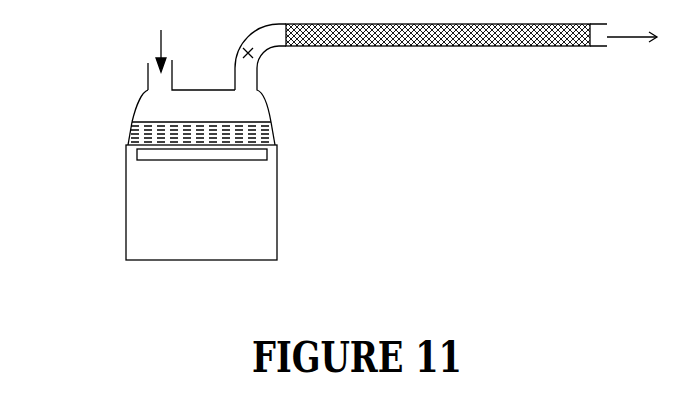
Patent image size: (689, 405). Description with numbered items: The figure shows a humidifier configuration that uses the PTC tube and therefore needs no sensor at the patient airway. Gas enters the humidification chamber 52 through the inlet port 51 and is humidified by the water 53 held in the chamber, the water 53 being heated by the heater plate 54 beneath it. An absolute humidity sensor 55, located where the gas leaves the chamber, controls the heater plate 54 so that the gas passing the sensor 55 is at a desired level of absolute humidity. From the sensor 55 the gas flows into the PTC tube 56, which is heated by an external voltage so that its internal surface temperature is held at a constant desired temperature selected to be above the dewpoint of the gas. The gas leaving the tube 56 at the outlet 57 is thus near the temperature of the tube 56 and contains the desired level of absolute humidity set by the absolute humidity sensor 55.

The inlet port 51 is at (148, 72).
The humidification chamber 52 is at (140, 96).
The water 53 is at (131, 123).
The heater plate 54 is at (175, 153).
The absolute humidity sensor 55 is at (254, 53).
The PTC tube 56 is at (449, 47).
The outlet 57 is at (597, 44).